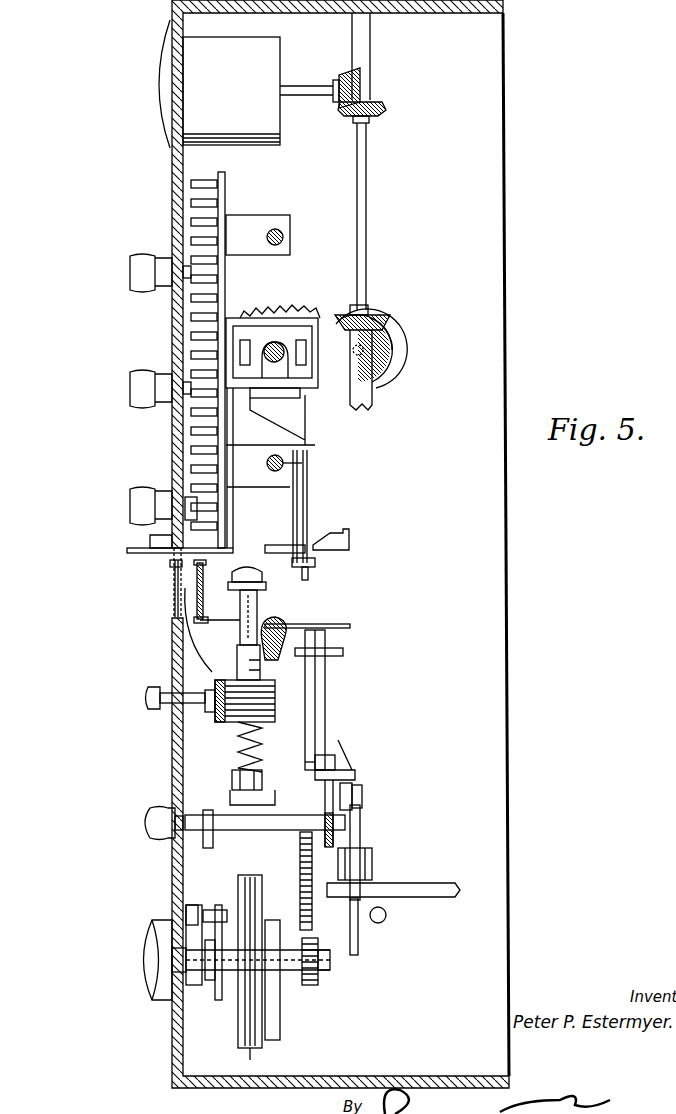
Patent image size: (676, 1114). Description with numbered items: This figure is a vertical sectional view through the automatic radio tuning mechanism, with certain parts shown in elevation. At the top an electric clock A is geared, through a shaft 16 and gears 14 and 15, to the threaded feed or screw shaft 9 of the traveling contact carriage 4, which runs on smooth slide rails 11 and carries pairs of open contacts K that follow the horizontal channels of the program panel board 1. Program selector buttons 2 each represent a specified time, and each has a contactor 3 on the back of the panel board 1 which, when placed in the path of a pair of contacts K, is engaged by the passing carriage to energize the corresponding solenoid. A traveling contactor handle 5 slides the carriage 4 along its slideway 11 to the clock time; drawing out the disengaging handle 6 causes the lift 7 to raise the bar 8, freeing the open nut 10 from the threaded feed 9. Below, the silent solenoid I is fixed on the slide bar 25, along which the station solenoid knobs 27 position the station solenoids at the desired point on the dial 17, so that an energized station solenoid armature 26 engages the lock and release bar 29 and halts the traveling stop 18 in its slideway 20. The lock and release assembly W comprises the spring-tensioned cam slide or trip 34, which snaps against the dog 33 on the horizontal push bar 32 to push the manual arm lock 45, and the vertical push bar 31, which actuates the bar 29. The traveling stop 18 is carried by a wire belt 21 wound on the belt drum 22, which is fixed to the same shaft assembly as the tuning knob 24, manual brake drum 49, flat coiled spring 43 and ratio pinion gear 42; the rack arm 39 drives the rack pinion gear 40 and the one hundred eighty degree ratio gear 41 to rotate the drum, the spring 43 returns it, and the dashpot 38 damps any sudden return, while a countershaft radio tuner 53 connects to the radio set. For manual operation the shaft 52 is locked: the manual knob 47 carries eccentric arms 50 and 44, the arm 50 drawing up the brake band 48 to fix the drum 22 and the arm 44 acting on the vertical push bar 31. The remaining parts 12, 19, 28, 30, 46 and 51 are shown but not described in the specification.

The electric clock A is at (210, 63).
The shaft 16 is at (302, 86).
The gear 15 is at (372, 108).
The traveling stop 18 is at (365, 213).
The open contacts K is at (210, 178).
The program panel board 1 is at (172, 210).
The traveling contact carriage 4 is at (226, 205).
The frame bracket 12 is at (290, 250).
The program selector buttons 2 is at (142, 284).
The gear 14 is at (282, 318).
The screw shaft 9 is at (284, 343).
The open nut 10 is at (338, 330).
The bar 8 is at (300, 424).
The slide rails 11 is at (310, 463).
The lift 7 is at (352, 535).
The traveling contactor handle 5 is at (127, 552).
The contactor 3 is at (192, 516).
The disengaging handle 6 is at (150, 538).
The dial 17 is at (205, 590).
The bolt 19 is at (177, 635).
The spring arm 28 is at (182, 657).
The slideway 20 is at (266, 590).
The plate 30 is at (322, 624).
The lock and release bar 29 is at (282, 650).
The station solenoid armature 26 is at (240, 666).
The slide bar 25 is at (219, 723).
The station solenoid knobs 27 is at (146, 700).
The silent solenoid I is at (266, 758).
The vertical push bar 31 is at (330, 700).
The manual arm lock 45 is at (340, 757).
The lock and release assembly W is at (360, 775).
The horizontal push bar 32 is at (358, 787).
The dog 33 is at (364, 800).
The cam slide 34 is at (361, 830).
The eccentric arm 44 is at (372, 858).
The shaft 46 is at (278, 822).
The eccentric arm 50 is at (206, 815).
The manual knob 47 is at (148, 822).
The ratio gear 41 is at (312, 906).
The rack pinion gear 40 is at (365, 884).
The rack arm 39 is at (360, 928).
The dashpot 38 is at (387, 917).
The countershaft radio tuner 53 is at (448, 895).
The bolt 51 is at (186, 904).
The shaft 52 is at (332, 963).
The ratio pinion gear 42 is at (320, 976).
The flat coiled spring 43 is at (282, 1008).
The belt drum 22 is at (263, 1040).
The wire belt 21 is at (250, 1060).
The brake band 48 is at (220, 1000).
The manual brake drum 49 is at (195, 988).
The tuning knob 24 is at (143, 960).